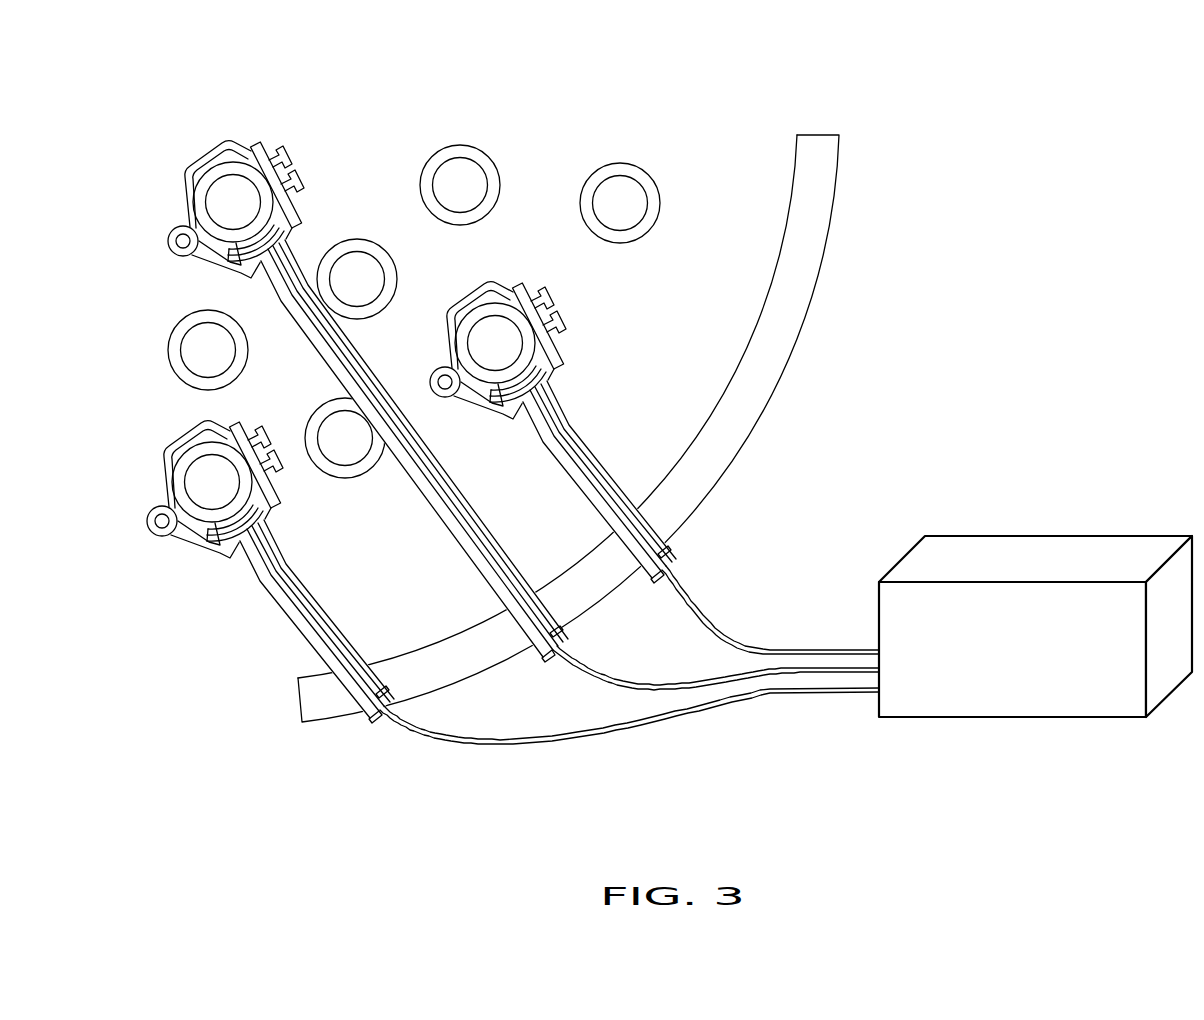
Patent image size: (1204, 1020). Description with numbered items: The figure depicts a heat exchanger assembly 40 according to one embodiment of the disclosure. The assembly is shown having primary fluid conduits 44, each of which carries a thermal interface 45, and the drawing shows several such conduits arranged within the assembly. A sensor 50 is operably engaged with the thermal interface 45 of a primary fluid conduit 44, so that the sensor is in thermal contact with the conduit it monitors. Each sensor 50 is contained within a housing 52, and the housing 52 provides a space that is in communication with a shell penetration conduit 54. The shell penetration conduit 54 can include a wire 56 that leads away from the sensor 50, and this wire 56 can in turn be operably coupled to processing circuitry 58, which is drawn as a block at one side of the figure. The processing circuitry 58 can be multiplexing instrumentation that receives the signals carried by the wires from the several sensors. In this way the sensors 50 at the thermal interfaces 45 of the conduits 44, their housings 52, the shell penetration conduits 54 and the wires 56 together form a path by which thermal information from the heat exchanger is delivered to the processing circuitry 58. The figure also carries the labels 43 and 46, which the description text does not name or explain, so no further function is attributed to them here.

The heat exchanger assembly 40 is at (622, 367).
The light guide 43 is at (790, 335).
The primary fluid conduits 44 is at (443, 325).
The thermal interface 45 is at (610, 176).
The light guide inner surface 46 is at (668, 292).
The sensor 50 is at (556, 376).
The housing 52 is at (558, 386).
The shell penetration conduit 54 is at (618, 480).
The wire 56 is at (722, 619).
The processing circuitry 58 is at (1080, 552).